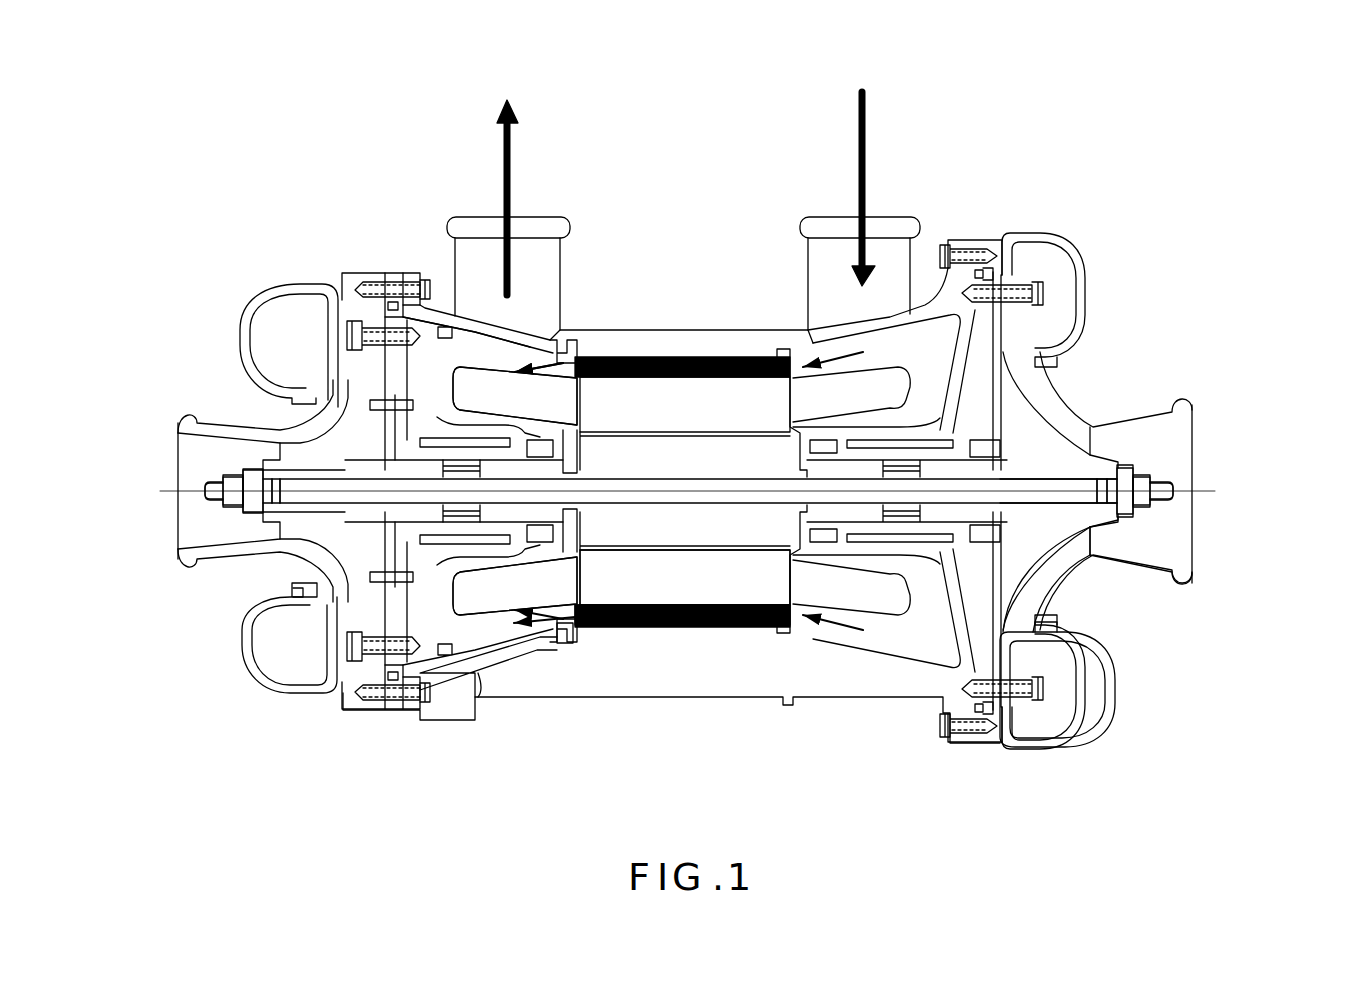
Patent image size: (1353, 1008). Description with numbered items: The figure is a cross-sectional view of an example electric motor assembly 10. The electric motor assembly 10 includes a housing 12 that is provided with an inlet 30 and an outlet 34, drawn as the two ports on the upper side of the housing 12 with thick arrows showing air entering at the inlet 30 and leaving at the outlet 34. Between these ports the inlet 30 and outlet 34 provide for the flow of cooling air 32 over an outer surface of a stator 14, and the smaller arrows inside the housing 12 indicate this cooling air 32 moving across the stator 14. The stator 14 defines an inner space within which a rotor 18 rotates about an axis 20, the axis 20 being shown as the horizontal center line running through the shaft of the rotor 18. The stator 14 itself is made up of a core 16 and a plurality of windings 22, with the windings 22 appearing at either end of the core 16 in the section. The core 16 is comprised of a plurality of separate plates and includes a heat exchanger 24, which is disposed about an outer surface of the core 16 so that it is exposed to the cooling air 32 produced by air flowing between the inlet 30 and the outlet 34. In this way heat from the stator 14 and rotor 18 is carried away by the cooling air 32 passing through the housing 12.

The electric motor assembly 10 is at (1133, 141).
The housing 12 is at (628, 340).
The stator 14 is at (490, 372).
The core 16 is at (593, 398).
The rotor 18 is at (765, 527).
The axis 20 is at (1042, 490).
The windings 22 is at (490, 400).
The heat exchanger 24 is at (622, 632).
The inlet 30 is at (878, 215).
The cooling air 32 is at (527, 343).
The outlet 34 is at (530, 215).